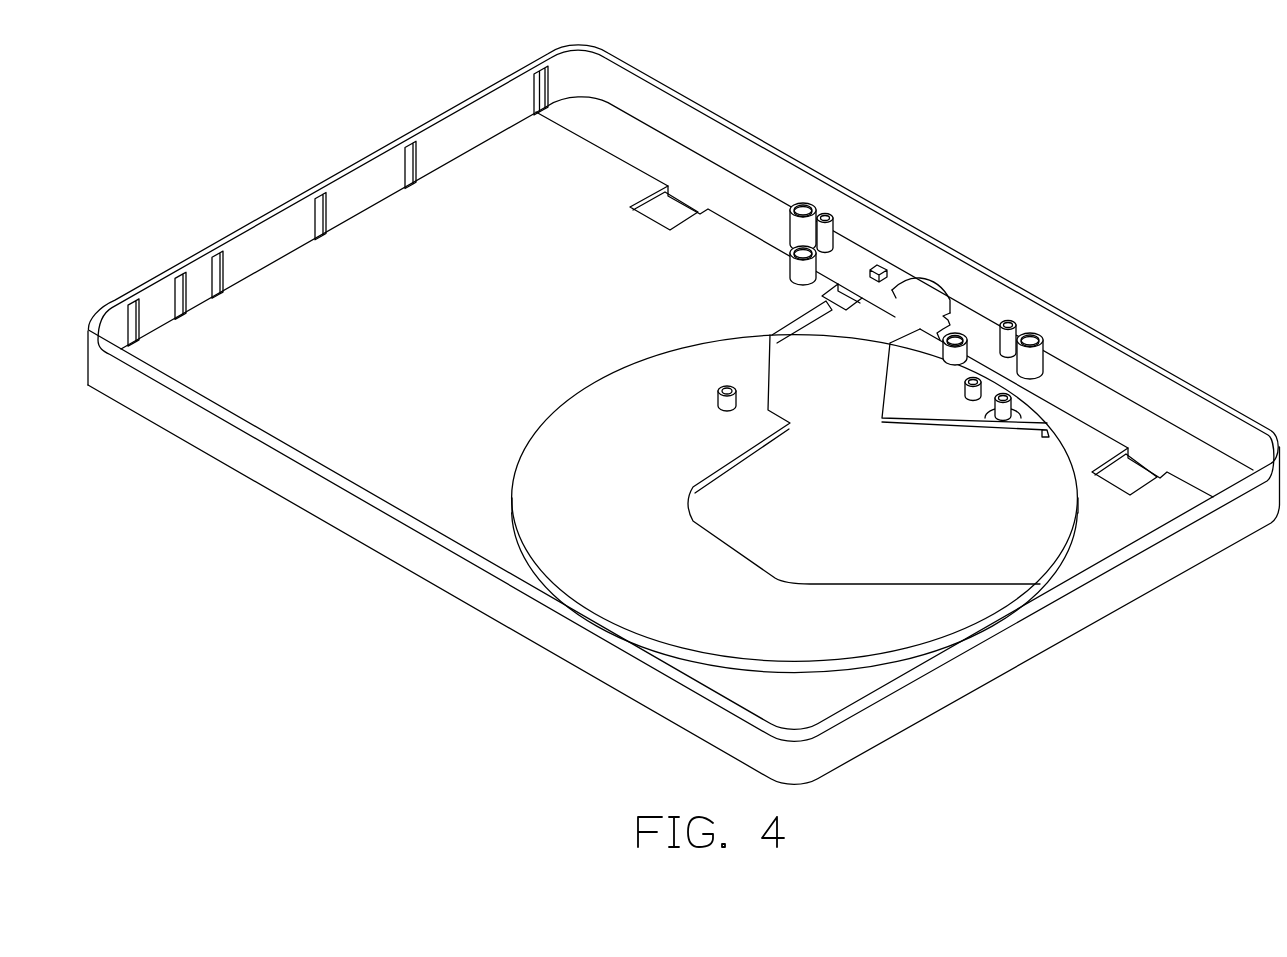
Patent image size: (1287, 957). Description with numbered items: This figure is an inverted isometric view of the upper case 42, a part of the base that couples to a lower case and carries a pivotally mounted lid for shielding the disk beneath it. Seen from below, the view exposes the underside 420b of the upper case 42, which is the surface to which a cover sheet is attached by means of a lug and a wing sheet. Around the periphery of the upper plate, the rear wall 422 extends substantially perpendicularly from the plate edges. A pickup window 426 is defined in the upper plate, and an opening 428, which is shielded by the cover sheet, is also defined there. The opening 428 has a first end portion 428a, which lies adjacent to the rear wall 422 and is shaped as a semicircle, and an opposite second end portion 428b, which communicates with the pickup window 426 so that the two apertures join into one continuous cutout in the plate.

The upper case 42 is at (924, 63).
The rear wall 422 is at (740, 153).
The underside 420b is at (400, 240).
The pickup window 426 is at (1030, 520).
The opening 428 is at (828, 347).
The first end portion 428a is at (923, 310).
The second end portion 428b is at (838, 400).